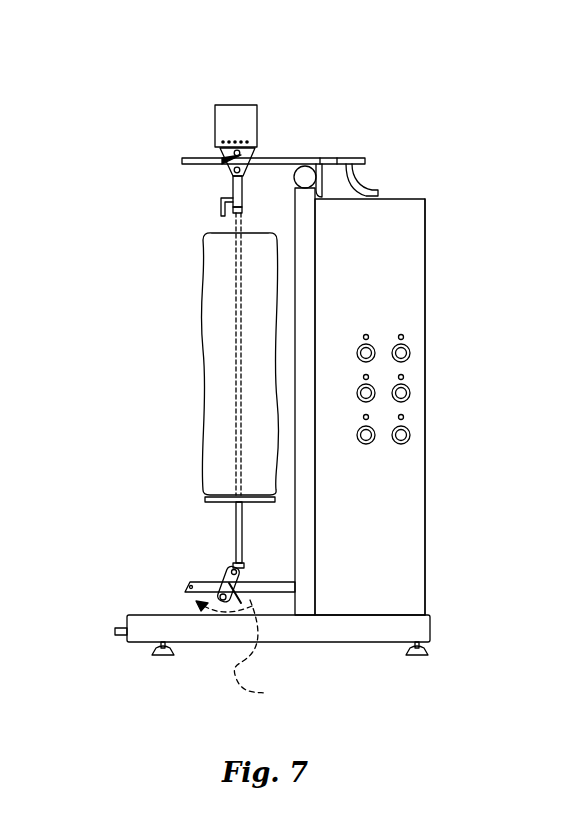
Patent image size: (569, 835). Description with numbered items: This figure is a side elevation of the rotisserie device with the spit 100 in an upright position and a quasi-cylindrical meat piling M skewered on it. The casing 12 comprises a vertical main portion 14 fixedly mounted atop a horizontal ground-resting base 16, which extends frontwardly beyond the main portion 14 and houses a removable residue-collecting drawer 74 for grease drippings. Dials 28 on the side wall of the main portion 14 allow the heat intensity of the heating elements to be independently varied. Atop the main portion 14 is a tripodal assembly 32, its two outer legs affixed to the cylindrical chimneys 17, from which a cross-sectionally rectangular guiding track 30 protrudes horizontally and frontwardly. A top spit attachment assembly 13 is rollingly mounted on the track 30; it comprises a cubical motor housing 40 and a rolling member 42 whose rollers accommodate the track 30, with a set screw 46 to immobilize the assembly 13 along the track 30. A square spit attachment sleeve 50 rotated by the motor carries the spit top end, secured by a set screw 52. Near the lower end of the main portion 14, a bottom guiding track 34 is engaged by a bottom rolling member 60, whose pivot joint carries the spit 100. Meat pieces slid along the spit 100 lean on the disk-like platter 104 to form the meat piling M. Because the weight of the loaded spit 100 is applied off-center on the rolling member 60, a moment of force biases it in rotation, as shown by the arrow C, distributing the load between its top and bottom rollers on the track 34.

The casing 12 is at (425, 538).
The top spit attachment assembly 13 is at (185, 133).
The vertical main portion 14 is at (380, 292).
The horizontal ground-resting base 16 is at (410, 628).
The cylindrical chimneys 17 is at (312, 483).
The dials 28 is at (406, 352).
The guiding track 30 is at (268, 160).
The tripodal assembly 32 is at (355, 161).
The bottom guiding track 34 is at (186, 584).
The motor housing 40 is at (232, 107).
The rolling member 42 is at (228, 150).
The set screw 46 is at (226, 163).
The spit attachment sleeve 50 is at (233, 184).
The set screw 52 is at (222, 207).
The bottom rolling member 60 is at (226, 574).
The residue-collecting drawer 74 is at (126, 622).
The spit 100 is at (236, 527).
The platter 104 is at (205, 500).
The meat piling M is at (203, 350).
The arrow C is at (240, 649).